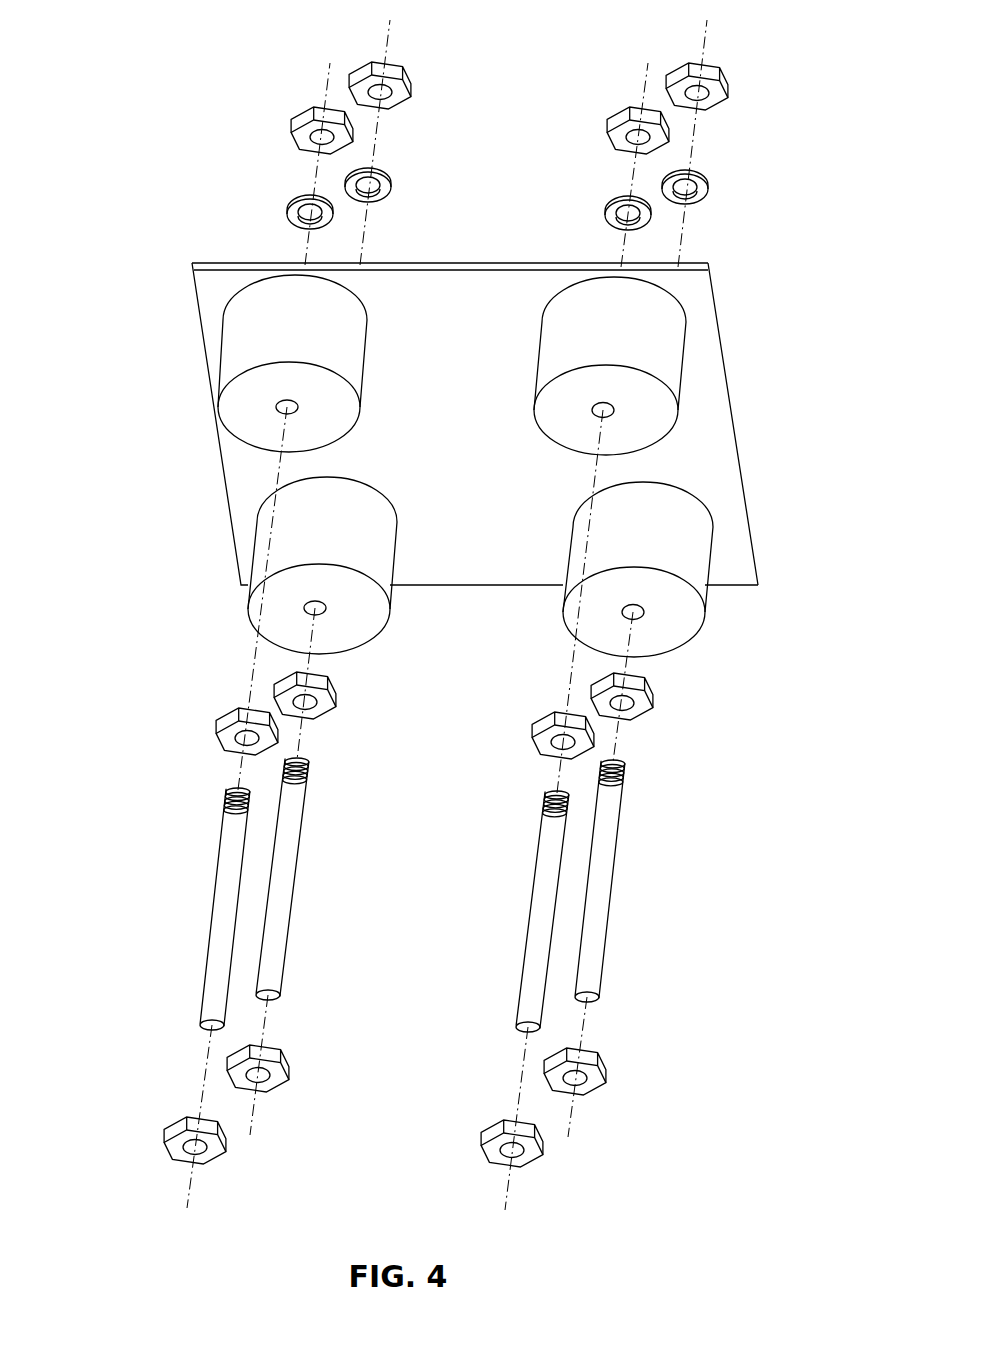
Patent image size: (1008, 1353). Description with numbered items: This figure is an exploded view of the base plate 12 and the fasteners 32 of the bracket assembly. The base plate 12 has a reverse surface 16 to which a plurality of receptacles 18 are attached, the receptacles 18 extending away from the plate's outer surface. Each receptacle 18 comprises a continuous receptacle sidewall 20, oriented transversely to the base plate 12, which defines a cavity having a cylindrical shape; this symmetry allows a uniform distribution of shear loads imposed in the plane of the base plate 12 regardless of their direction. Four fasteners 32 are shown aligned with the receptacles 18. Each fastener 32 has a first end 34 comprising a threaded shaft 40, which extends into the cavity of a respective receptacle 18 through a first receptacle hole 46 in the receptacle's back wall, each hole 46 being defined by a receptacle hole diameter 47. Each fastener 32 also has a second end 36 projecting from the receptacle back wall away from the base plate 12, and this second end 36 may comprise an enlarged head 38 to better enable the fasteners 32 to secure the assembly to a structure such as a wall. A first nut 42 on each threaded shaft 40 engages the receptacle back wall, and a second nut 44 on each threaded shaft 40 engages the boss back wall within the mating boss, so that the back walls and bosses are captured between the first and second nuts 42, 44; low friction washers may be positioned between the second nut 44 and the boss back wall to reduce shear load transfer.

The base plate 12 is at (718, 485).
The reverse surface 16 is at (242, 490).
The receptacle 18 is at (248, 316).
The receptacle sidewall 20 is at (237, 362).
The fastener 32 is at (236, 817).
The first end 34 is at (300, 757).
The second end 36 is at (272, 998).
The enlarged head 38 is at (163, 1133).
The threaded shaft 40 is at (630, 771).
The first nut 42 is at (545, 718).
The second nut 44 is at (305, 110).
The first receptacle hole 46 is at (620, 418).
The receptacle hole diameter 47 is at (247, 420).